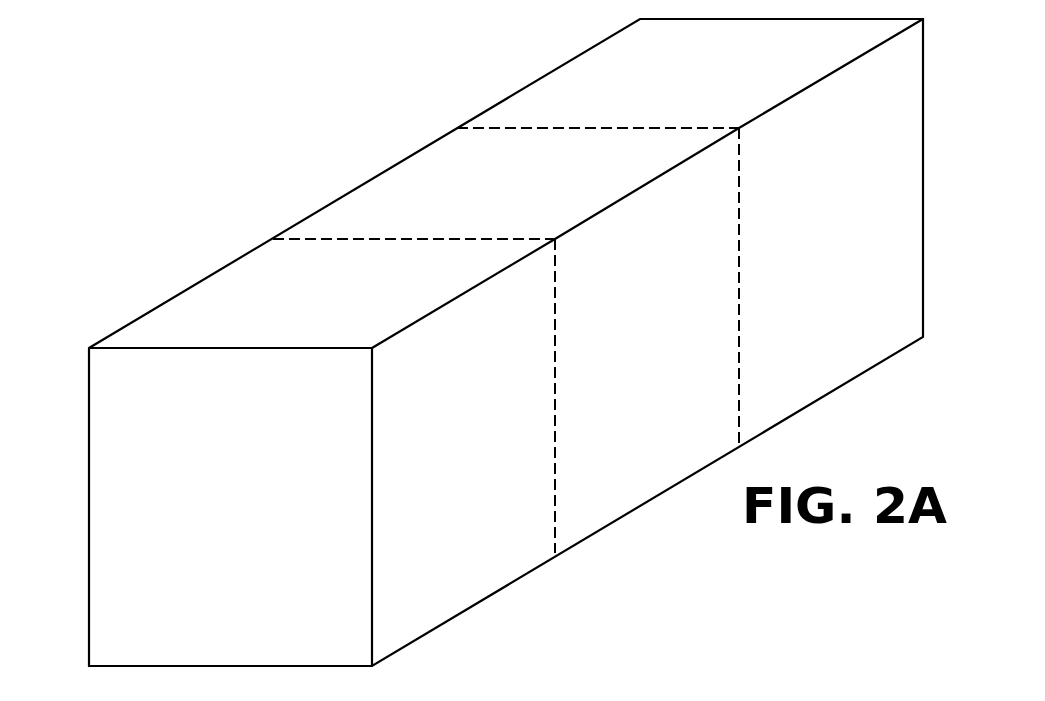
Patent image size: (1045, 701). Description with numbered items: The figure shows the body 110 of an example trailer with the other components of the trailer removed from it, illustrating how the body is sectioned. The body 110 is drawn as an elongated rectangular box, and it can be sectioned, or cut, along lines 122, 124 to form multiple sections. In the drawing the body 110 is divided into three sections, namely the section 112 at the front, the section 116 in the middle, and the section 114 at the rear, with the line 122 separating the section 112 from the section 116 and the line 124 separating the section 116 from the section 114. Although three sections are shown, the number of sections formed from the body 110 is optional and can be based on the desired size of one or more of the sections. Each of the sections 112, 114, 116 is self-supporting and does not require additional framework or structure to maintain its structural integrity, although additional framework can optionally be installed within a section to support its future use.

The body 110 is at (64, 309).
The section 112 is at (343, 304).
The section 114 is at (710, 84).
The section 116 is at (527, 194).
The line 122 is at (555, 352).
The line 124 is at (739, 240).